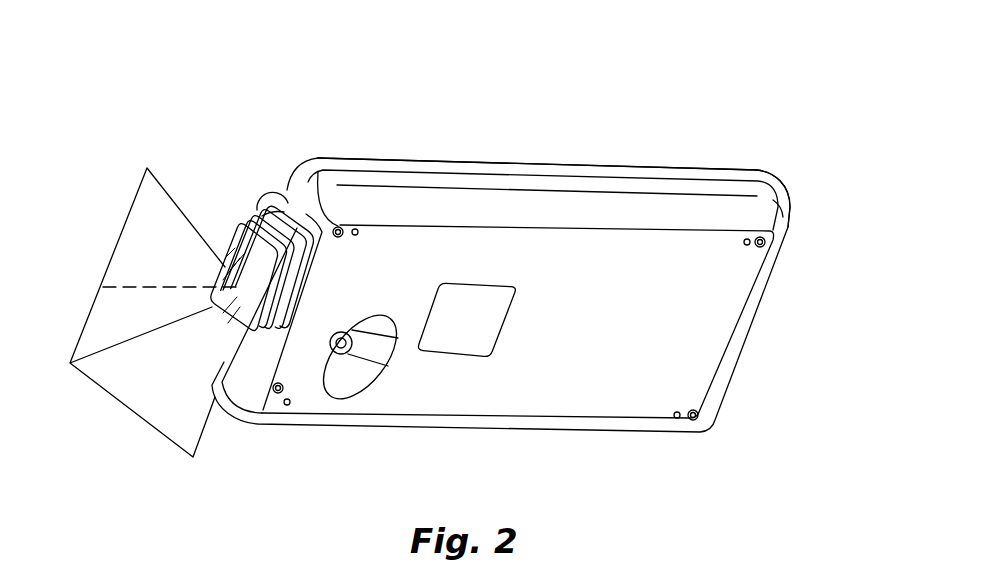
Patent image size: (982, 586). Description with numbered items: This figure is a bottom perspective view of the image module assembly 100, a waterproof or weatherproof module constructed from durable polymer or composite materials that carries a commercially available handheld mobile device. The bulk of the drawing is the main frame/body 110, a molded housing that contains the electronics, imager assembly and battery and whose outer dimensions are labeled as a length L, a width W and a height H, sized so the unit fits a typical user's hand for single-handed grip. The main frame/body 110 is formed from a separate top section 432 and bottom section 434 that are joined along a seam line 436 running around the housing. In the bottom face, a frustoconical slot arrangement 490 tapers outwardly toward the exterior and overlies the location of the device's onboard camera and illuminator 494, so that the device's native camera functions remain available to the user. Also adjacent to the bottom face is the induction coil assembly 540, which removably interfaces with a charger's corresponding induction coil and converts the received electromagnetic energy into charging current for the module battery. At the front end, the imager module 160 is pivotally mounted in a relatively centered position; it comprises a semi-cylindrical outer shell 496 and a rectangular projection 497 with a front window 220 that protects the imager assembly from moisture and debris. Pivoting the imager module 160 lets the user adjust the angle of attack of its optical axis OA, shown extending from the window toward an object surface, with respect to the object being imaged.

The image module assembly 100 is at (580, 140).
The main frame/body 110 is at (786, 213).
The imager module 160 is at (271, 194).
The front window 220 is at (235, 210).
The top section 432 is at (347, 160).
The bottom section 434 is at (362, 176).
The seam line 436 is at (415, 182).
The frustoconical slot arrangement 490 is at (386, 359).
The onboard camera and illuminator 494 is at (357, 328).
The semi-cylindrical outer shell 496 is at (265, 218).
The rectangular projection 497 is at (270, 300).
The induction coil assembly 540 is at (495, 311).
The optical axis OA is at (128, 287).
The height H is at (663, 257).
The width W is at (777, 437).
The length L is at (212, 430).